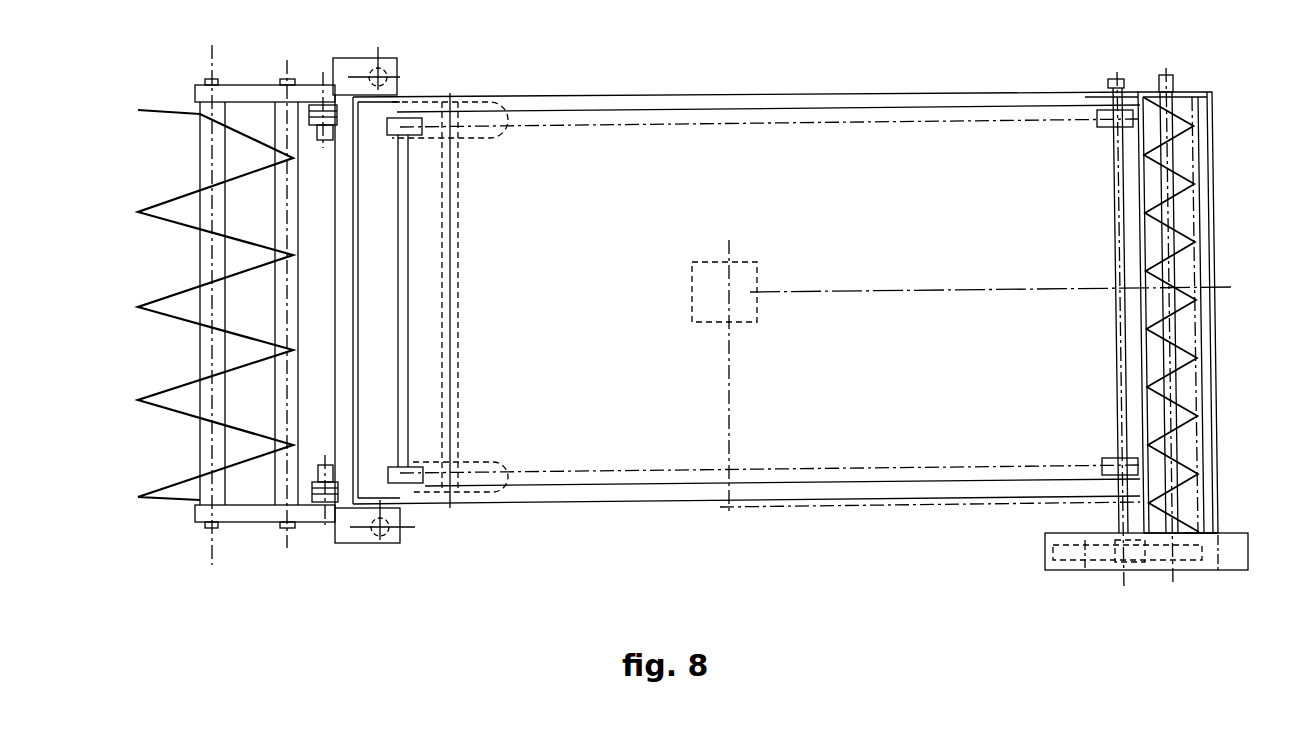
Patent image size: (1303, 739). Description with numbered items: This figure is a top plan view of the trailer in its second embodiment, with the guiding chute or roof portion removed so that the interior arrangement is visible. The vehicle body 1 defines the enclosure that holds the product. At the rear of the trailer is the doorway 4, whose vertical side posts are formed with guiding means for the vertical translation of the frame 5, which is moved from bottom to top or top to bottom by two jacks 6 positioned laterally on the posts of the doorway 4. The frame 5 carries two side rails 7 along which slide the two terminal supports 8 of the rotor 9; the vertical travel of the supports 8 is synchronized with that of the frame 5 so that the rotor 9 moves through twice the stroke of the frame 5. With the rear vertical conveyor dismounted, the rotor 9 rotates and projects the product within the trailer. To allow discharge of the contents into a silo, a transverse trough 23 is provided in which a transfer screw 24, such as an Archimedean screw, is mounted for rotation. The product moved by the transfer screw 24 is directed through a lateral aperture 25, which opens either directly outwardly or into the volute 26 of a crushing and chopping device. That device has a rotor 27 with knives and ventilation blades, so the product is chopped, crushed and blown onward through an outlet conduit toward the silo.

The vehicle body 1 is at (743, 138).
The doorway 4 is at (365, 117).
The frame 5 is at (348, 64).
The jacks 6 is at (383, 64).
The side rails 7 is at (304, 108).
The terminal supports 8 is at (265, 92).
The rotor 9 is at (205, 270).
The transverse trough 23 is at (1208, 150).
The transfer screw 24 is at (1168, 222).
The lateral aperture 25 is at (1205, 535).
The volute 26 is at (1250, 556).
The rotor of crushing and chopping device 27 is at (1140, 570).